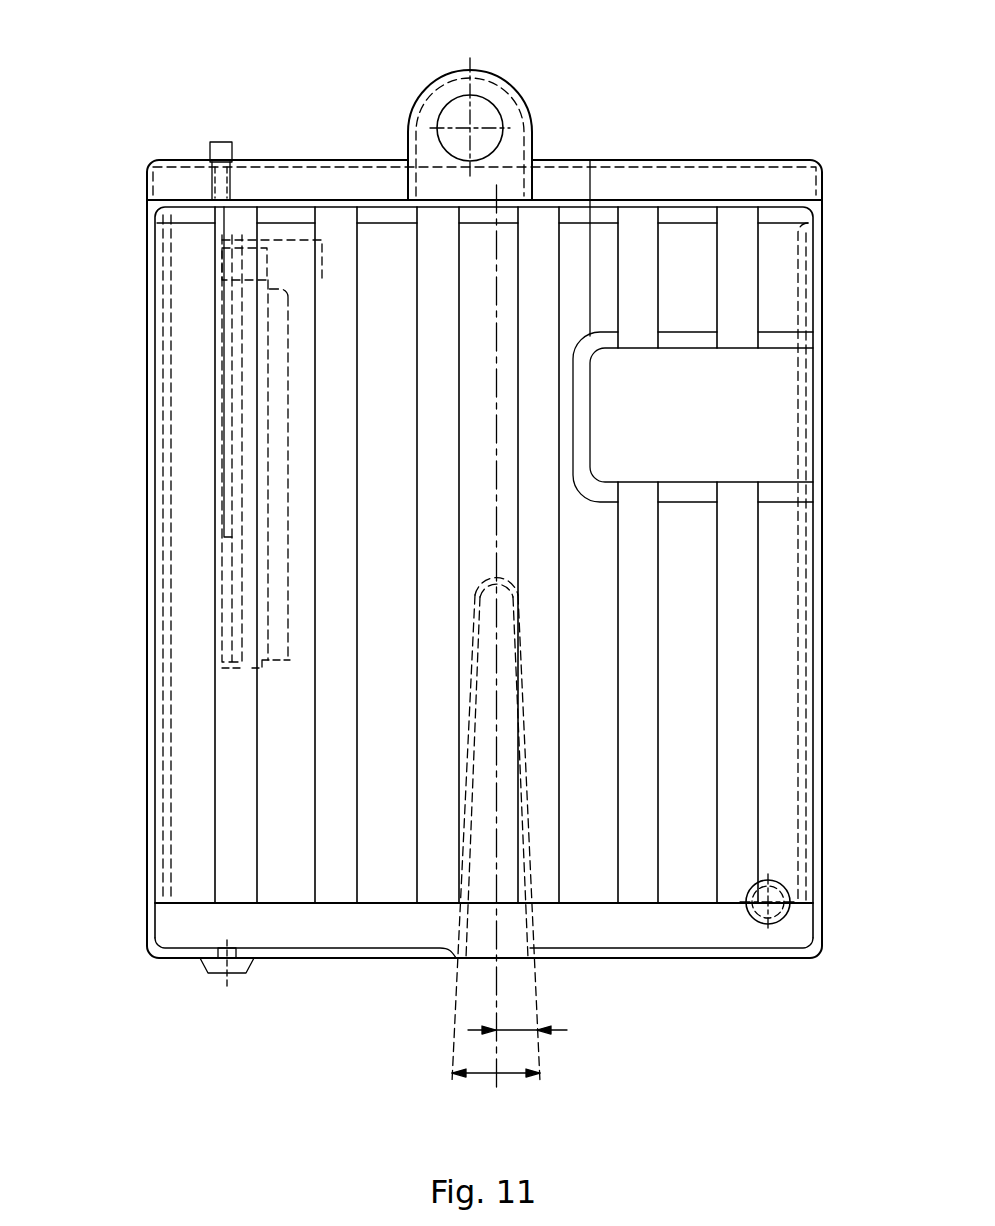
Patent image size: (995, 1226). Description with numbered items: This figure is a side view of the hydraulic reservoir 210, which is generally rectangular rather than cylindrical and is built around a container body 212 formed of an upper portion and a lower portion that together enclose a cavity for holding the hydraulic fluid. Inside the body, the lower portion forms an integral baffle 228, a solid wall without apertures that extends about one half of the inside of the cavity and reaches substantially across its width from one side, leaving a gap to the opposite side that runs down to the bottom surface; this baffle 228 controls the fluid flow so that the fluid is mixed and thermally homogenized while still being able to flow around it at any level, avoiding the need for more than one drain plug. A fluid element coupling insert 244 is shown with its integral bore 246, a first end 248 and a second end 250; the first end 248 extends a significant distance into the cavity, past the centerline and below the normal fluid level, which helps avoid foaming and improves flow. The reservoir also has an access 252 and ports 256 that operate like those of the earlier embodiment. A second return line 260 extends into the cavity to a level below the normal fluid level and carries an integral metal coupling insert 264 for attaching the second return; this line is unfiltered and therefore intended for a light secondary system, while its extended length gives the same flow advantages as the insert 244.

The hydraulic reservoir 210 is at (419, 983).
The container body 212 is at (702, 190).
The baffle 228 is at (486, 608).
The fluid element coupling insert 244 is at (283, 258).
The integral bore 246 is at (250, 656).
The first end 248 is at (228, 668).
The second end 250 is at (273, 232).
The access 252 is at (483, 110).
The ports 256 is at (776, 892).
The second return line 260 is at (203, 460).
The integral metal coupling insert 264 is at (218, 546).